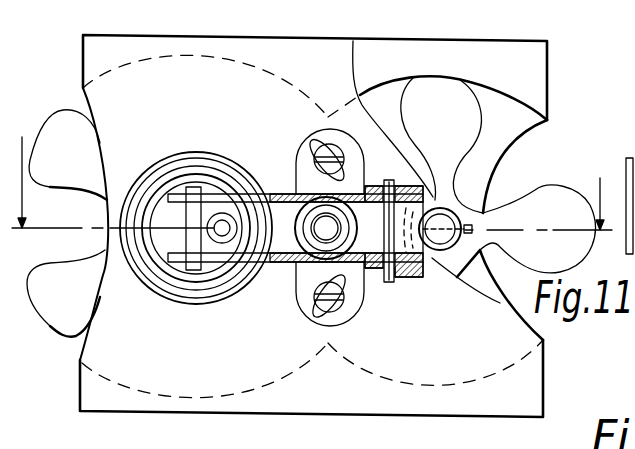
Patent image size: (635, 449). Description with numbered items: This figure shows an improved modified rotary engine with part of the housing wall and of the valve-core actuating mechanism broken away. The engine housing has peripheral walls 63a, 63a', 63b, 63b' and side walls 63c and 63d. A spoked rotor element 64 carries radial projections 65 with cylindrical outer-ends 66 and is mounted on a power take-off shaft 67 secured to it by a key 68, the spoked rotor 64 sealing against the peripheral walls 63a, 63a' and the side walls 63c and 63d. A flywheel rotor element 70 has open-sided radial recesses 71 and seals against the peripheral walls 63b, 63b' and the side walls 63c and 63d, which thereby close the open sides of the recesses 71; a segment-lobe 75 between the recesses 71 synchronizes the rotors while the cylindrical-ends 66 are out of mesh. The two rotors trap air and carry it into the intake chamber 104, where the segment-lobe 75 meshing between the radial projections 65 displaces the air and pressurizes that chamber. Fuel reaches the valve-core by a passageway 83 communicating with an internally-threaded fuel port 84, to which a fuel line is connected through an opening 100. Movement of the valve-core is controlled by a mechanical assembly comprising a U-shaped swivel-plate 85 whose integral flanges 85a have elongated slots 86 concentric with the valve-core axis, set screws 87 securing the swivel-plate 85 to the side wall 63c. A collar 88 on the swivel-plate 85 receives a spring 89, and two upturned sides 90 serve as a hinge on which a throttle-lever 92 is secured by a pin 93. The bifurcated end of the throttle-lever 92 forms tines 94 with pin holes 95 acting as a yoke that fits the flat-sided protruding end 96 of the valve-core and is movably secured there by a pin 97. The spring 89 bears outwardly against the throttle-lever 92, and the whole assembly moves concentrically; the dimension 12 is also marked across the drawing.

The width dimension 12 is at (312, 174).
The peripheral wall 63a is at (453, 208).
The peripheral wall 63a' is at (435, 362).
The peripheral wall 63b is at (221, 86).
The peripheral wall 63b' is at (205, 370).
The side wall 63c is at (280, 352).
The side wall 63d is at (541, 141).
The spoked rotor element 64 is at (463, 190).
The radial projections 65 is at (450, 180).
The cylindrical outer-ends 66 is at (456, 116).
The power take-off shaft 67 is at (445, 229).
The key 68 is at (502, 192).
The flywheel rotor element 70 is at (63, 110).
The open-sided radial recesses 71 is at (80, 224).
The segment-lobe 75 is at (77, 168).
The passageway 83 is at (214, 234).
The fuel port 84 is at (214, 222).
The U-shaped swivel-plate 85 is at (297, 193).
The integral flanges 85a is at (358, 176).
The elongated slots 86 is at (326, 175).
The set screws 87 is at (314, 145).
The collar 88 is at (336, 228).
The spring 89 is at (340, 239).
The upturned sides 90 is at (452, 283).
The throttle-lever 92 is at (272, 265).
The pin 93 is at (386, 278).
The tines 94 is at (222, 266).
The pin holes 95 is at (213, 445).
The protruding end 96 is at (160, 267).
The pin 97 is at (193, 275).
The opening 100 is at (240, 178).
The intake chamber 104 is at (393, 119).